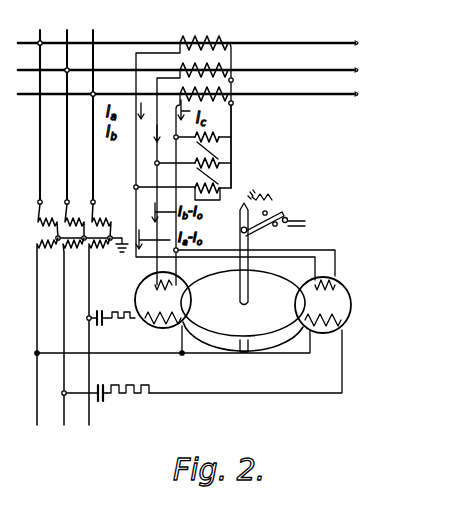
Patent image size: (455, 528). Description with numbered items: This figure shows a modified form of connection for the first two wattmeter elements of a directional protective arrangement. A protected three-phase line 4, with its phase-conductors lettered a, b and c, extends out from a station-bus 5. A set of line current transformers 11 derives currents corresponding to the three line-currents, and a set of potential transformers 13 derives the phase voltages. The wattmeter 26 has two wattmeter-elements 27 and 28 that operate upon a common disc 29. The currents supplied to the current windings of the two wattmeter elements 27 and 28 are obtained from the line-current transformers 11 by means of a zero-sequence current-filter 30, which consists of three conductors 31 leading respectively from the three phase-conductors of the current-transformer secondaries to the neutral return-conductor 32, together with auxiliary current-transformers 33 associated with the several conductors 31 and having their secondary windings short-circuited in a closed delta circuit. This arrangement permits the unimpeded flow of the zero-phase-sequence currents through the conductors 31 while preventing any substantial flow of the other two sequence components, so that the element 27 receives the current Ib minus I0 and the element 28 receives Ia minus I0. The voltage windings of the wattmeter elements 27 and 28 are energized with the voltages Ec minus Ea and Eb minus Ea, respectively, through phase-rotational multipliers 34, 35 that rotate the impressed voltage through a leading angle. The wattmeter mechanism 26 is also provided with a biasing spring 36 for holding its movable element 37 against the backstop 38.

The protected three-phase line 4 is at (259, 94).
The station-bus 5 is at (93, 117).
The line current transformers 11 is at (185, 39).
The potential transformers 13 is at (97, 220).
The wattmeter 26 is at (278, 243).
The wattmeter-element 27 is at (136, 295).
The wattmeter-element 28 is at (352, 301).
The disc 29 is at (224, 300).
The zero-sequence current-filter 30 is at (288, 156).
The conductors 31 is at (134, 186).
The neutral return-conductor 32 is at (232, 118).
The auxiliary current-transformers 33 is at (232, 165).
The phase-rotational multiplier 34 is at (102, 401).
The phase-rotational multiplier 35 is at (140, 403).
The biasing spring 36 is at (268, 200).
The movable element 37 is at (288, 218).
The backstop 38 is at (280, 228).